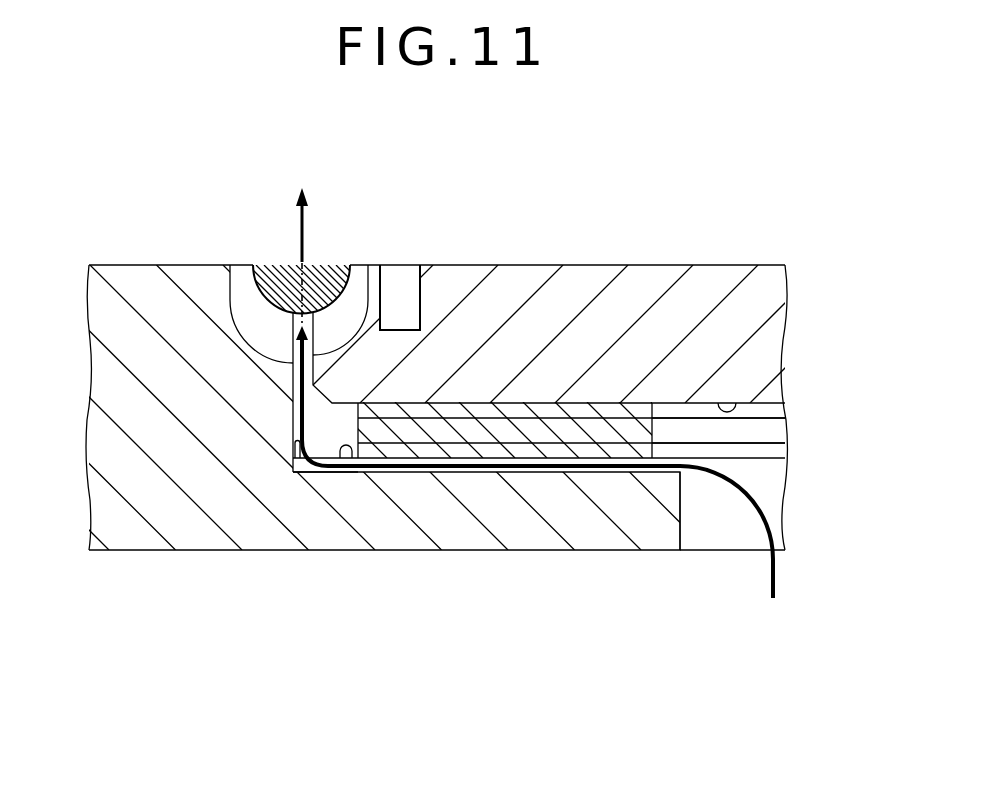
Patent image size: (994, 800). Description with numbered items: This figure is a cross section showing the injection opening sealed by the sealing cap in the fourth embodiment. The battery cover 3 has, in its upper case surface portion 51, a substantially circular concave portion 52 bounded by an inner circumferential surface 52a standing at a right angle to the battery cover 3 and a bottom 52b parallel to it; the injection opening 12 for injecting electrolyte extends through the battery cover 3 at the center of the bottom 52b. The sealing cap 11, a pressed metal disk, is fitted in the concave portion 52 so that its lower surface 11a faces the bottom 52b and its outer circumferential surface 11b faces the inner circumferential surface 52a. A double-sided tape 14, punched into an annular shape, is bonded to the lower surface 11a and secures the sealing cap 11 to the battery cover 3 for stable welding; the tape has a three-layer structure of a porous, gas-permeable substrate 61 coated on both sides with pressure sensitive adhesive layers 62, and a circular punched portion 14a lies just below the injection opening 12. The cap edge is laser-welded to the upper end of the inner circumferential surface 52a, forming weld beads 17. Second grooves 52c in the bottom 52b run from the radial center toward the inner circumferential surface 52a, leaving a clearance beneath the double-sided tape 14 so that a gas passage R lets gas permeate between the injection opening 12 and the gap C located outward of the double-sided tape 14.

The battery cover 3 is at (140, 297).
The case surface portion 51 is at (192, 268).
The gap C is at (233, 268).
The weld beads 17 is at (350, 266).
The outer circumferential surface 11b is at (370, 266).
The sealing cap 11 is at (630, 297).
The lower surface 11a is at (738, 408).
The concave portion 52 is at (237, 495).
The inner circumferential surface 52a is at (300, 472).
The second grooves 52c is at (318, 473).
The bottom 52b is at (353, 478).
The double-sided tape 14 is at (542, 531).
The pressure sensitive adhesive layers 62 is at (565, 407).
The substrate 61 is at (563, 435).
The gas passage R is at (580, 453).
The circular punched portion 14a is at (722, 463).
The injection opening 12 is at (750, 535).